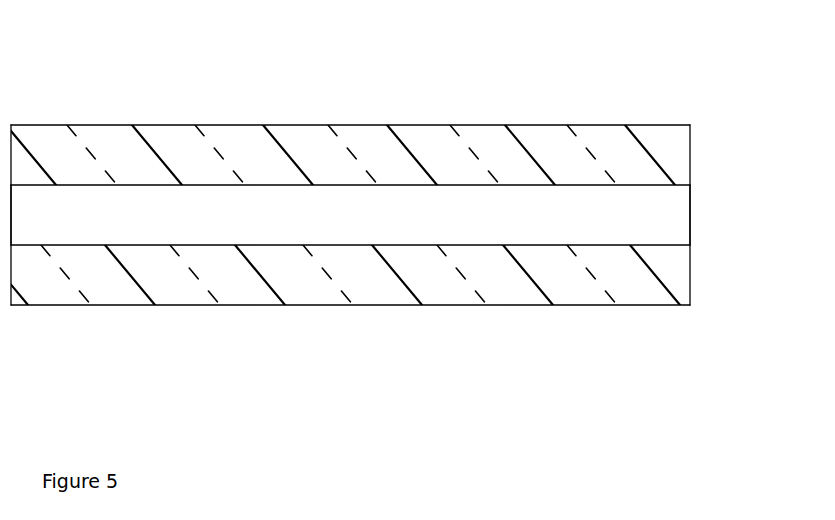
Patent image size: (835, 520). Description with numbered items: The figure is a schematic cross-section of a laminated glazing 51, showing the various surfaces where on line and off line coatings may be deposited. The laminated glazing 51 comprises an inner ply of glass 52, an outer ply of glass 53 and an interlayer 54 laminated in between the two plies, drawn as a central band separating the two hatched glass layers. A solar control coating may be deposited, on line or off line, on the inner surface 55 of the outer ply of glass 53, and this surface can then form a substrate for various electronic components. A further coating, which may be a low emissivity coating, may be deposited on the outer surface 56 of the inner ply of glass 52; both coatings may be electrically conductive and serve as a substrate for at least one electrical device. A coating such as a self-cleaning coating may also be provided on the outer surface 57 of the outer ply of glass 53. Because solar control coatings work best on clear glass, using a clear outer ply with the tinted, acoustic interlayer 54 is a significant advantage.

The laminated glazing 51 is at (725, 130).
The inner ply of glass 52 is at (155, 268).
The outer ply of glass 53 is at (149, 153).
The interlayer 54 is at (462, 208).
The inner surface of the outer ply of glass 55 is at (298, 185).
The outer surface of the inner ply of glass 56 is at (417, 308).
The outer surface of the outer ply of glass 57 is at (477, 127).